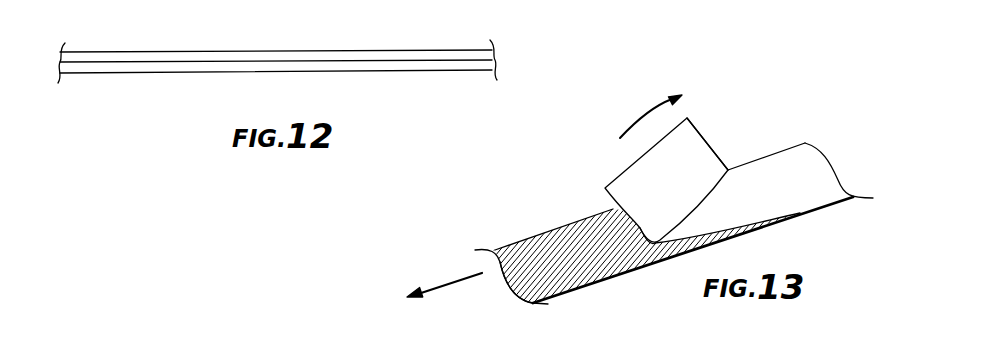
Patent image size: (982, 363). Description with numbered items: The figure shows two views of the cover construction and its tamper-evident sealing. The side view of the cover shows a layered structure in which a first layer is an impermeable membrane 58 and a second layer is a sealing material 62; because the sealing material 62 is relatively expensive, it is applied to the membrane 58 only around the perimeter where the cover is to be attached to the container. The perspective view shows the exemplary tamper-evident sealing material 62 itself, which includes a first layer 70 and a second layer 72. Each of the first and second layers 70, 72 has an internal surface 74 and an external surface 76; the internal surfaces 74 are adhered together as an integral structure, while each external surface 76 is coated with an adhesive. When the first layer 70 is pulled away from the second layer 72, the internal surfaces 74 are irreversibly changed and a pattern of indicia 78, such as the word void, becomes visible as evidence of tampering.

In FIG. 12, the impermeable membrane 58 is at (317, 55).
In FIG. 12, the sealing material 62 is at (362, 69).
In FIG. 13, the sealing material 62 is at (757, 93).
In FIG. 13, the first layer 70 is at (802, 179).
In FIG. 13, the second layer 72 is at (592, 292).
In FIG. 13, the internal surface 74 is at (640, 163).
In FIG. 13, the external surface 76 is at (775, 166).
In FIG. 13, the pattern of indicia 78 is at (693, 130).